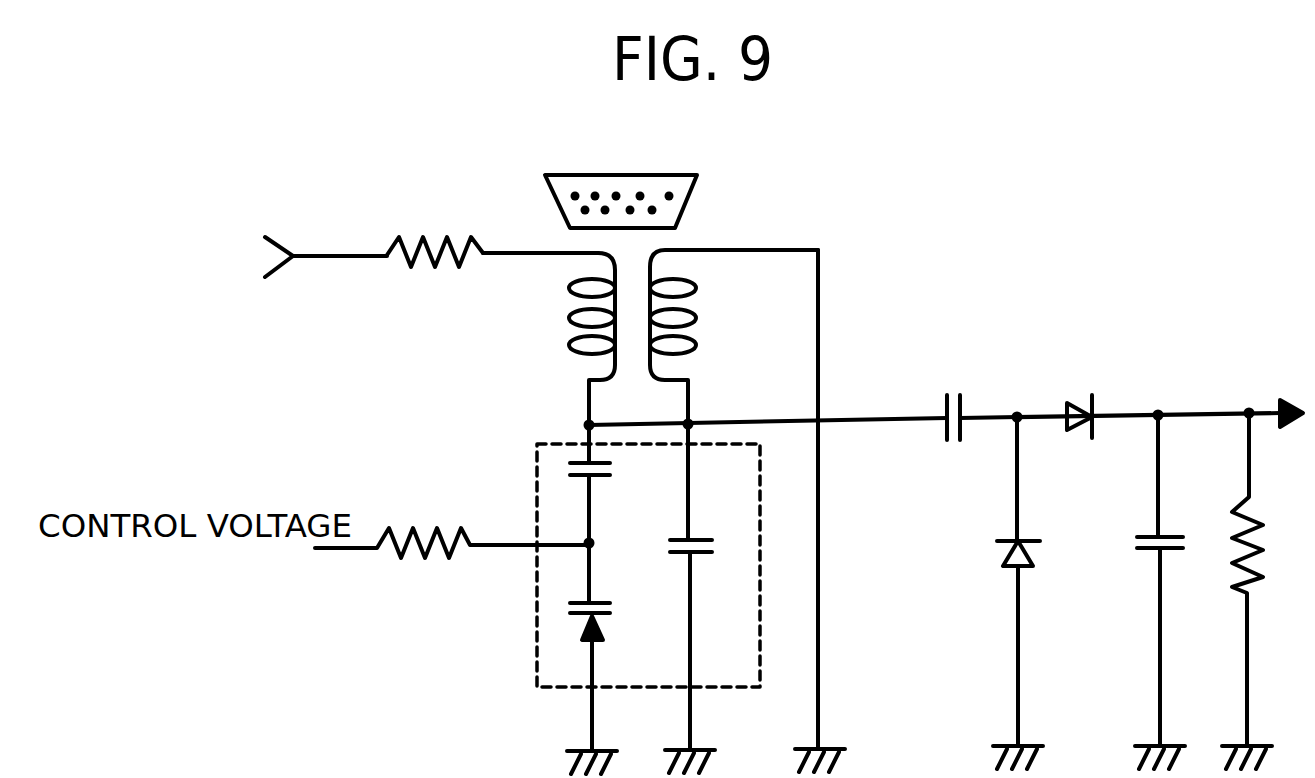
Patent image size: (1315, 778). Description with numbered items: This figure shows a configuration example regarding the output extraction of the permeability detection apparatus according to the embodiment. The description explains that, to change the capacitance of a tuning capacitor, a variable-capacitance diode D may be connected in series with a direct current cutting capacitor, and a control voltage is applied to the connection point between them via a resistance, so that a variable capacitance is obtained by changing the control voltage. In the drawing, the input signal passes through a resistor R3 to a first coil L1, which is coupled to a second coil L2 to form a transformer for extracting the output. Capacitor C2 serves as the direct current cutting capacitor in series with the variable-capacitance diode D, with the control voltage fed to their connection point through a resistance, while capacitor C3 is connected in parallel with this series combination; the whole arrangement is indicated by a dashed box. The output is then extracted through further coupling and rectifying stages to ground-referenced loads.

The resistor R3 is at (435, 231).
The primary coil L1 is at (571, 339).
The secondary coil L2 is at (734, 337).
The capacitor C2 is at (614, 484).
The capacitor C3 is at (705, 587).
The variable-capacitance diode D is at (605, 647).